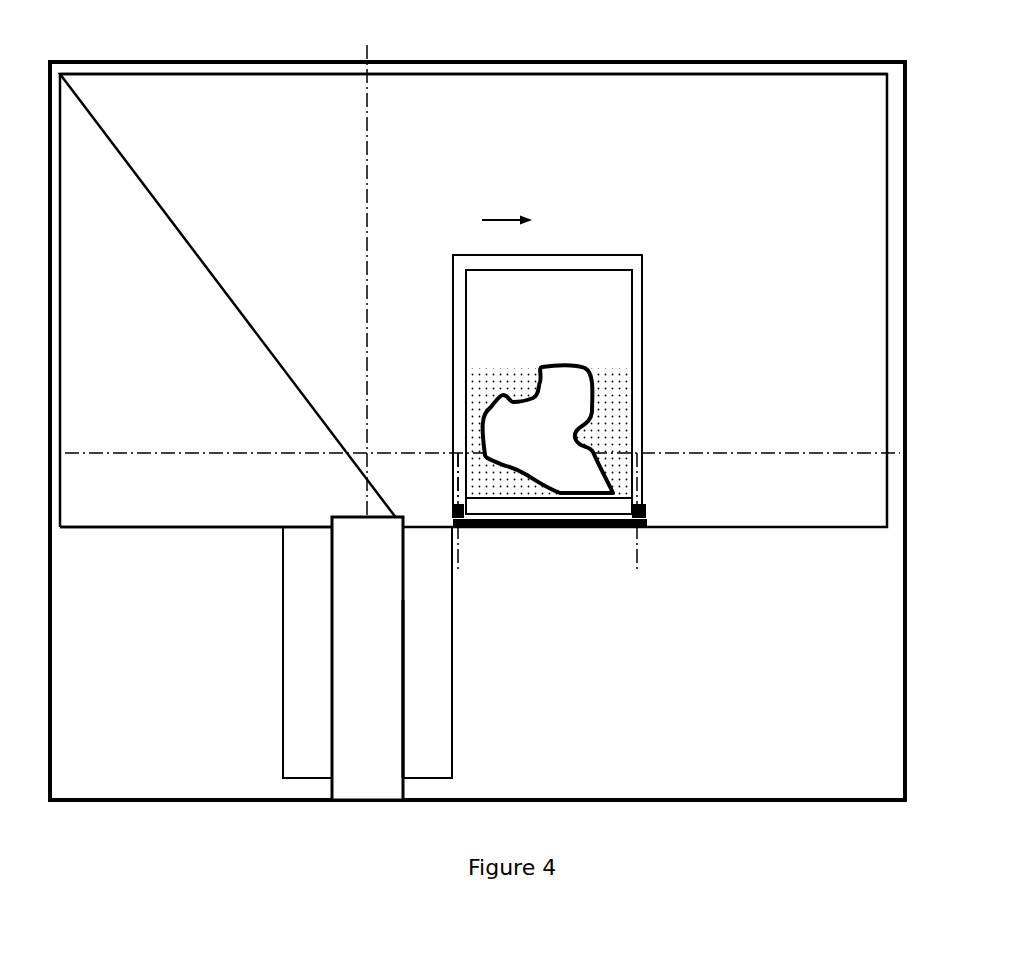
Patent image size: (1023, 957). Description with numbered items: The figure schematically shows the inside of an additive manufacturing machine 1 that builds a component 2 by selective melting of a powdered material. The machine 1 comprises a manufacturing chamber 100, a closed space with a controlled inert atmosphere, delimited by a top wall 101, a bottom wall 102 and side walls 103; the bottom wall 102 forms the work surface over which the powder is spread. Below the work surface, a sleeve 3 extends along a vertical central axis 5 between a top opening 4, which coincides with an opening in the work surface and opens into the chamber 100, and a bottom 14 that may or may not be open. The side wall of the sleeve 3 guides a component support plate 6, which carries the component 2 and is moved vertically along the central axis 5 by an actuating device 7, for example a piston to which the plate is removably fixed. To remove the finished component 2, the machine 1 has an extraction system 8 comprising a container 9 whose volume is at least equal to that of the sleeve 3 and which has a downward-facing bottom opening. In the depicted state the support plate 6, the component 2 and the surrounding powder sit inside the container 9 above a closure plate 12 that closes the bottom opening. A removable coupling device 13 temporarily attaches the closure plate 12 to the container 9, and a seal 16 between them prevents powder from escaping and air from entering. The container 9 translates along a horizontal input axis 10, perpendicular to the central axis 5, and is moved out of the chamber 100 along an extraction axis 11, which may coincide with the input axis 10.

The machine 1 is at (918, 248).
The component 2 is at (484, 406).
The sleeve 3 is at (462, 618).
The top opening 4 is at (299, 515).
The central axis 5 is at (355, 292).
The component support plate 6 is at (628, 488).
The actuating device 7 is at (428, 735).
The extraction system 8 is at (549, 384).
The container 9 is at (653, 352).
The input axis 10 is at (835, 440).
The extraction axis 11 is at (547, 512).
The closure plate 12 is at (615, 545).
The removable coupling device 13 is at (448, 462).
The bottom 14 is at (295, 770).
The seal 16 is at (660, 508).
The manufacturing chamber 100 is at (722, 148).
The top wall 101 is at (238, 95).
The bottom wall 102 is at (124, 515).
The side walls 103 is at (75, 247).